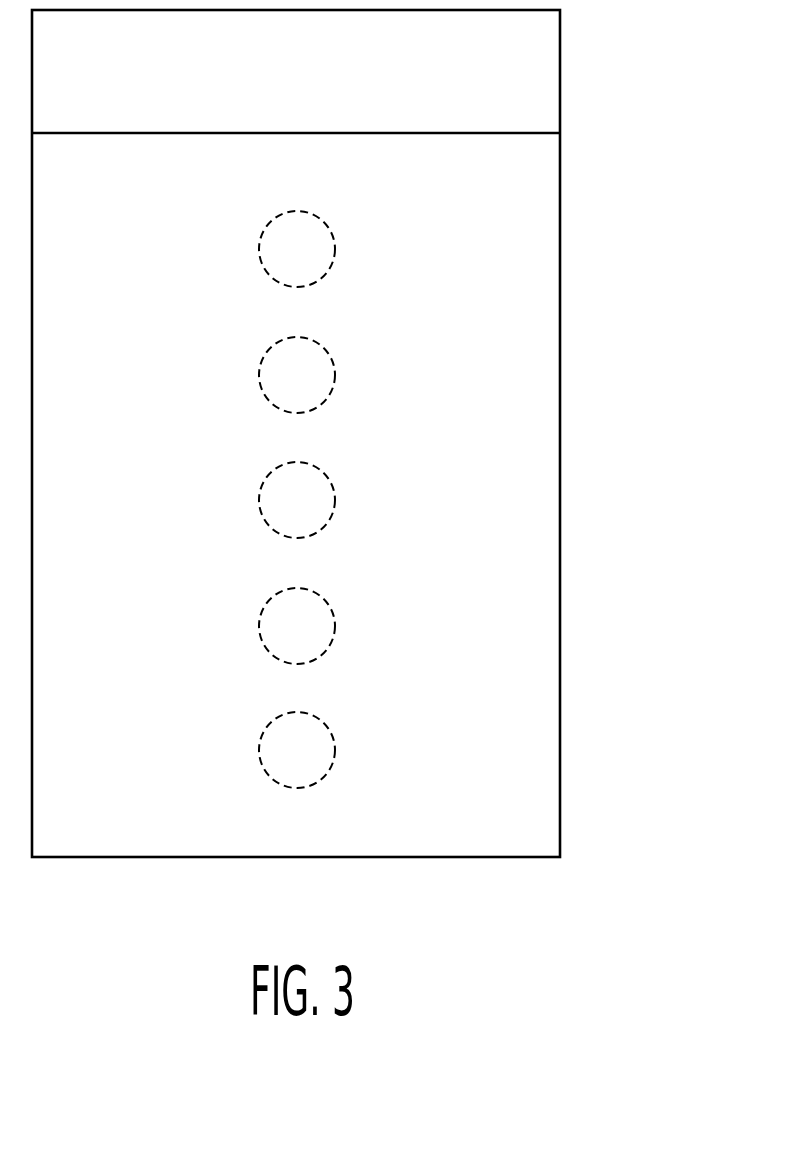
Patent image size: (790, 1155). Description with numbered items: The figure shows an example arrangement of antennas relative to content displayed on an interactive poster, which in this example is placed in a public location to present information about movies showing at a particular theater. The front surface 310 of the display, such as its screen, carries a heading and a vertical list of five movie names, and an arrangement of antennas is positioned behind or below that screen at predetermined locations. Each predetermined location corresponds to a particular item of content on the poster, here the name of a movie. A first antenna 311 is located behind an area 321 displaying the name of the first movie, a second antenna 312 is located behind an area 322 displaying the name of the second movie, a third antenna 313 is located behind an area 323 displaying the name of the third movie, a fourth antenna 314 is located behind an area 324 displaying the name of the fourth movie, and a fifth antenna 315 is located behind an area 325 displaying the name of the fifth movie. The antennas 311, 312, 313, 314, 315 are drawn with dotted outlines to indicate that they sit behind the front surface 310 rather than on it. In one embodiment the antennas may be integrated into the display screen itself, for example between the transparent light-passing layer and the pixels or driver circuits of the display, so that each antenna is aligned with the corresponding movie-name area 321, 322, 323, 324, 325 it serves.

The front surface of the display 310 is at (561, 183).
The first antenna 311 is at (272, 277).
The second antenna 312 is at (271, 403).
The third antenna 313 is at (272, 528).
The fourth antenna 314 is at (270, 655).
The fifth antenna 315 is at (280, 785).
The area displaying the name of Movie 1 321 is at (362, 240).
The area displaying the name of Movie 2 322 is at (367, 363).
The area displaying the name of Movie 3 323 is at (367, 490).
The area displaying the name of Movie 4 324 is at (367, 617).
The area displaying the name of Movie 5 325 is at (367, 742).